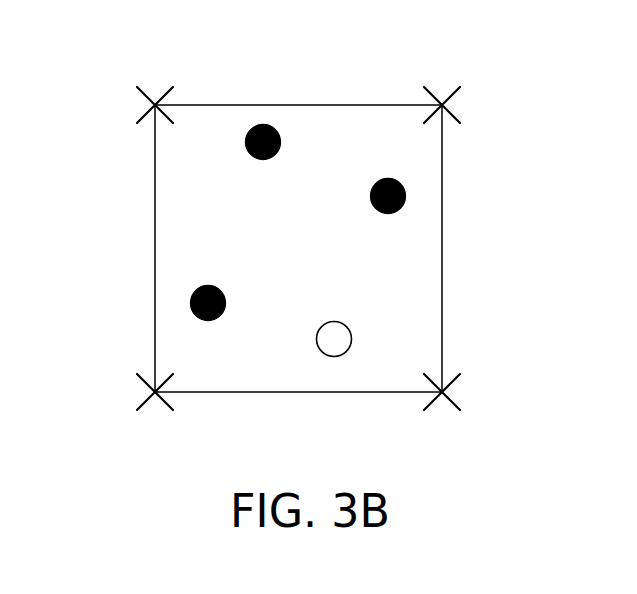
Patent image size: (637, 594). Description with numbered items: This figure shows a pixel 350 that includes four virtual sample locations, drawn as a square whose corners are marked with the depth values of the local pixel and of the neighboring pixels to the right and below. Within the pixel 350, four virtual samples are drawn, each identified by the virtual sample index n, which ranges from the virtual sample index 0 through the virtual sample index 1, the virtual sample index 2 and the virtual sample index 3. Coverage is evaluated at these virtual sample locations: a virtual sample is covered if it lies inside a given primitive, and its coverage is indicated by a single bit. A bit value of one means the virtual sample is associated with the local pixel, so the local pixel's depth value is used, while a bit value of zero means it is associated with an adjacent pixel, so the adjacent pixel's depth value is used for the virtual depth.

The pixel 350 is at (62, 37).
The virtual sample index 0 is at (286, 142).
The virtual sample index 1 is at (364, 196).
The virtual sample index 2 is at (233, 303).
The virtual sample index 3 is at (357, 339).